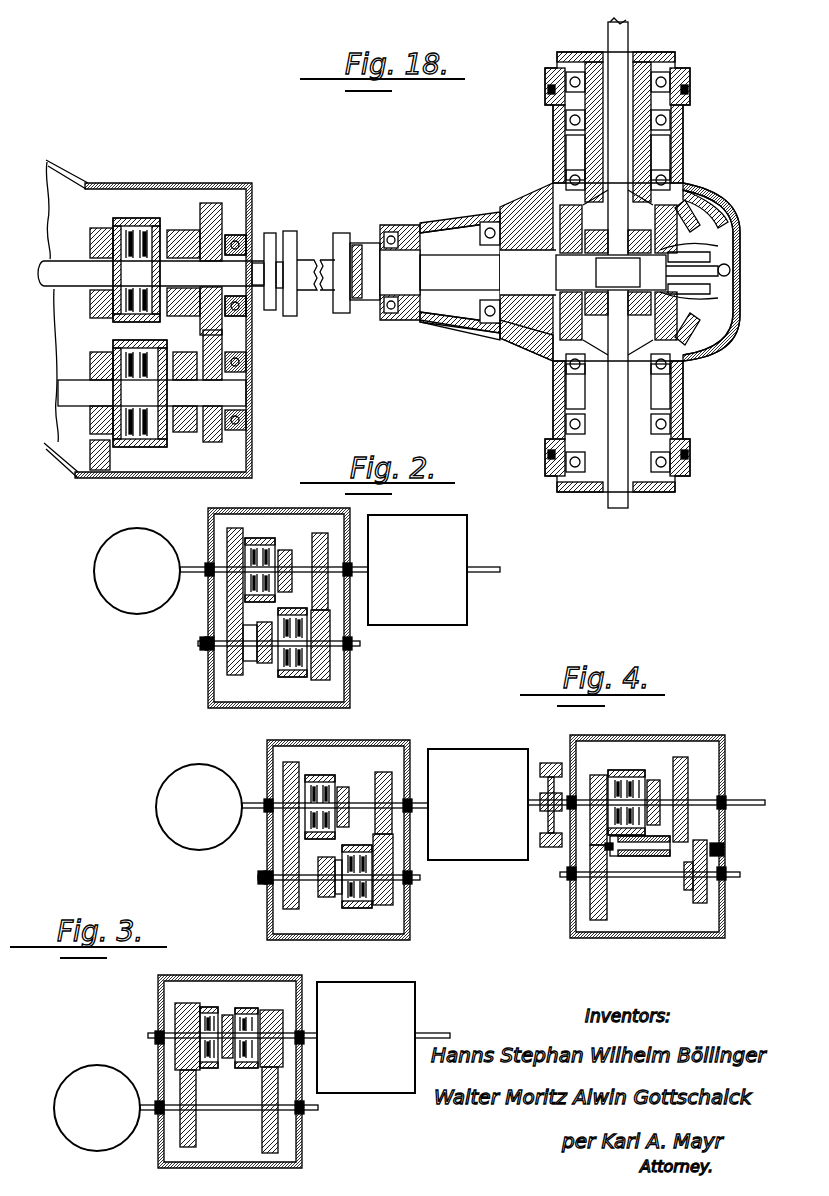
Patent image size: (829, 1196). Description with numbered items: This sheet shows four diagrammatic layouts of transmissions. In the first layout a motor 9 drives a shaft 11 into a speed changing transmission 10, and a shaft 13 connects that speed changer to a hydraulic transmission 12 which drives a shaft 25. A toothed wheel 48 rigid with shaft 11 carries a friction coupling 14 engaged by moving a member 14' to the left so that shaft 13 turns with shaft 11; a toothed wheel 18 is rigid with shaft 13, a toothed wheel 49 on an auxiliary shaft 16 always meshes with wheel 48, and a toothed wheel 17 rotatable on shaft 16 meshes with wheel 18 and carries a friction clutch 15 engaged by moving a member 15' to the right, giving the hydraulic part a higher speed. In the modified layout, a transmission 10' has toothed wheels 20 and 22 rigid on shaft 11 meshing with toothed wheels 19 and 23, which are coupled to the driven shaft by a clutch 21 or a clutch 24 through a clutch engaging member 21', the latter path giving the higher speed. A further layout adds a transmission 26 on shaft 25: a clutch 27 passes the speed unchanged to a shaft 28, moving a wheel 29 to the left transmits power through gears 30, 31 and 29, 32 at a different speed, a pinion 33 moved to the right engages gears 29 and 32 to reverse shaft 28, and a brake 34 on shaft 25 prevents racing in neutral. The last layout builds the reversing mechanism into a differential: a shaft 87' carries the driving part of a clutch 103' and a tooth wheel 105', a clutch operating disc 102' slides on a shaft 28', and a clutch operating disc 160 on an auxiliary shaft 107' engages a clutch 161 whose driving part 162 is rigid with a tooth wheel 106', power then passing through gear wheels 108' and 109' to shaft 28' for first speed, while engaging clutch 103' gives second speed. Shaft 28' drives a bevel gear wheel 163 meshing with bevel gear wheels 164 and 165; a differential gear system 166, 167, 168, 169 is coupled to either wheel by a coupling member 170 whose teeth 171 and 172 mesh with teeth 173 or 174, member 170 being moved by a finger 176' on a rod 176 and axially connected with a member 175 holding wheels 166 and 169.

In FIG. 18, the shaft 87' is at (141, 292).
In FIG. 18, the auxiliary shaft 107' is at (131, 398).
In FIG. 18, the tooth wheel 105' is at (81, 260).
In FIG. 18, the clutch 103' is at (139, 237).
In FIG. 18, the clutch operating disc 102' is at (198, 244).
In FIG. 18, the gear wheel 109' is at (267, 297).
In FIG. 18, the tooth wheel 106' is at (64, 393).
In FIG. 18, the clutch 161 is at (145, 447).
In FIG. 18, the driving part of clutch 162 is at (105, 470).
In FIG. 18, the clutch operating disc 160 is at (186, 432).
In FIG. 18, the gear wheel 108' is at (256, 390).
In FIG. 18, the shaft 28' is at (306, 253).
In FIG. 18, the bevel gear wheel 163 is at (490, 218).
In FIG. 18, the coupling member 170 is at (500, 325).
In FIG. 18, the member 175 is at (566, 184).
In FIG. 18, the differential gear wheel 168 is at (682, 165).
In FIG. 18, the bevel gear wheel 164 is at (562, 350).
In FIG. 18, the differential gear wheel 167 is at (690, 378).
In FIG. 18, the bevel gear wheel 165 is at (518, 205).
In FIG. 18, the differential gear wheel 169 is at (548, 342).
In FIG. 18, the differential gear wheel 166 is at (692, 350).
In FIG. 18, the teeth 171 is at (702, 238).
In FIG. 18, the teeth 173 is at (716, 206).
In FIG. 18, the teeth 174 is at (700, 308).
In FIG. 18, the teeth 172 is at (690, 298).
In FIG. 18, the finger 176' is at (723, 261).
In FIG. 18, the rod 176 is at (720, 270).
In FIG. 2, the motor 9 is at (122, 604).
In FIG. 4, the motor 9 is at (178, 840).
In FIG. 3, the motor 9 is at (78, 1135).
In FIG. 2, the shaft 11 is at (194, 565).
In FIG. 4, the shaft 11 is at (251, 800).
In FIG. 3, the shaft 11 is at (146, 1102).
In FIG. 2, the speed changing transmission 10 is at (279, 598).
In FIG. 4, the speed changing transmission 10 is at (338, 828).
In FIG. 2, the hydraulic transmission 12 is at (417, 570).
In FIG. 4, the hydraulic transmission 12 is at (478, 804).
In FIG. 3, the hydraulic transmission 12 is at (366, 1037).
In FIG. 2, the shaft 25 is at (486, 572).
In FIG. 4, the shaft 25 is at (567, 810).
In FIG. 3, the shaft 25 is at (433, 1033).
In FIG. 2, the shaft 13 is at (358, 578).
In FIG. 4, the shaft 13 is at (416, 812).
In FIG. 3, the shaft 13 is at (306, 1040).
In FIG. 2, the toothed wheel 48 is at (226, 603).
In FIG. 4, the toothed wheel 48 is at (290, 762).
In FIG. 2, the friction coupling 14 is at (270, 564).
In FIG. 4, the friction coupling 14 is at (330, 794).
In FIG. 2, the clutch engaging member 14' is at (298, 538).
In FIG. 4, the clutch engaging member 14' is at (368, 761).
In FIG. 2, the toothed wheel 18 is at (320, 533).
In FIG. 4, the toothed wheel 18 is at (385, 772).
In FIG. 2, the toothed wheel 17 is at (332, 665).
In FIG. 4, the toothed wheel 17 is at (395, 900).
In FIG. 2, the friction clutch 15 is at (279, 653).
In FIG. 4, the friction clutch 15 is at (357, 888).
In FIG. 2, the auxiliary shaft 16 is at (220, 660).
In FIG. 4, the auxiliary shaft 16 is at (326, 897).
In FIG. 2, the clutch engaging member 15' is at (239, 662).
In FIG. 4, the clutch engaging member 15' is at (333, 908).
In FIG. 2, the toothed wheel 49 is at (226, 637).
In FIG. 4, the toothed wheel 49 is at (283, 866).
In FIG. 4, the brake 34 is at (548, 763).
In FIG. 4, the transmission 26 is at (660, 748).
In FIG. 4, the shaft 28 is at (667, 783).
In FIG. 4, the gear 30 is at (596, 775).
In FIG. 4, the gear 31 is at (592, 895).
In FIG. 4, the clutch 27 is at (628, 772).
In FIG. 4, the gear 32 is at (682, 757).
In FIG. 4, the pinion 33 is at (650, 857).
In FIG. 4, the wheel 29 is at (708, 890).
In FIG. 3, the transmission 10' is at (230, 1060).
In FIG. 3, the toothed wheel 19 is at (175, 1010).
In FIG. 3, the toothed wheel 20 is at (180, 1132).
In FIG. 3, the clutch 21 is at (212, 1025).
In FIG. 3, the clutch engaging member 21' is at (242, 999).
In FIG. 3, the clutch 24 is at (246, 1008).
In FIG. 3, the toothed wheel 23 is at (270, 1010).
In FIG. 3, the toothed wheel 22 is at (280, 1132).